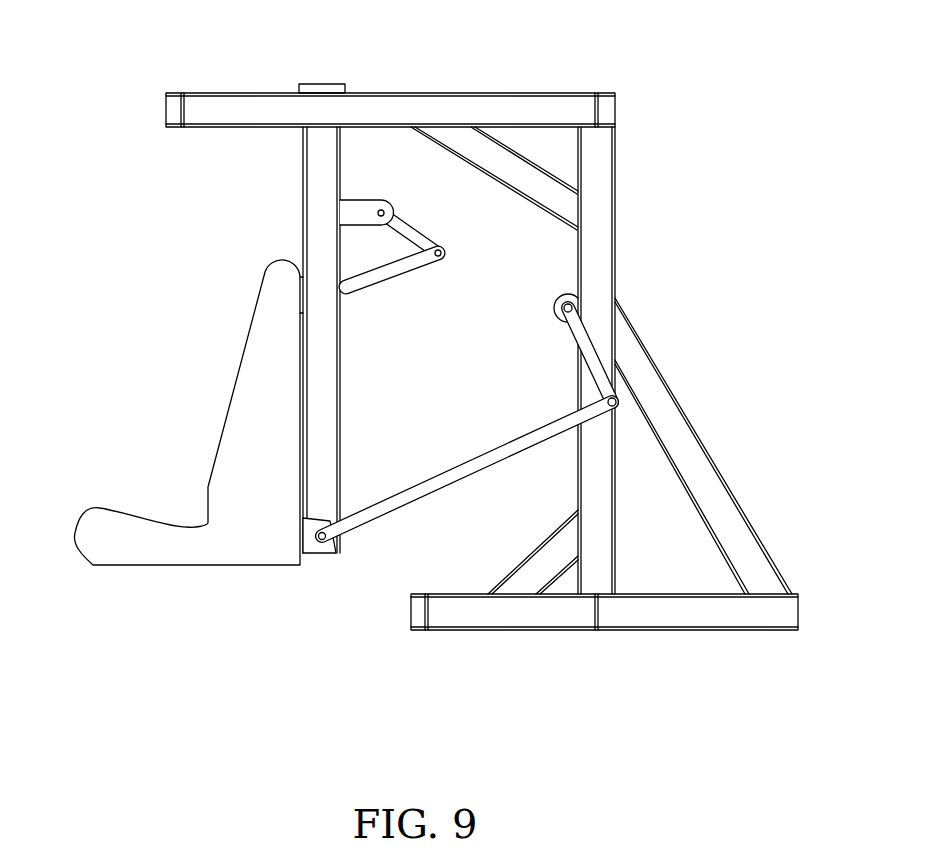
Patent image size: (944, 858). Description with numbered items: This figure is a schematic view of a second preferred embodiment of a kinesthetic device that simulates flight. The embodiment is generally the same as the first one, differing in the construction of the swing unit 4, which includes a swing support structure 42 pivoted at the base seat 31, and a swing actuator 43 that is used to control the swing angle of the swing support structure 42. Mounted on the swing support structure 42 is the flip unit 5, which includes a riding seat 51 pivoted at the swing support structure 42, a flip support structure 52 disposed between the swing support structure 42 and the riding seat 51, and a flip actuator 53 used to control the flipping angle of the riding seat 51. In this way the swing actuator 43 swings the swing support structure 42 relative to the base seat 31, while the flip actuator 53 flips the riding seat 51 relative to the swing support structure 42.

The base seat 31 is at (535, 108).
The swing unit 4 is at (690, 302).
The swing support structure 42 is at (316, 178).
The swing actuator 43 is at (497, 452).
The flip unit 5 is at (257, 412).
The riding seat 51 is at (248, 394).
The flip support structure 52 is at (319, 546).
The flip actuator 53 is at (387, 272).